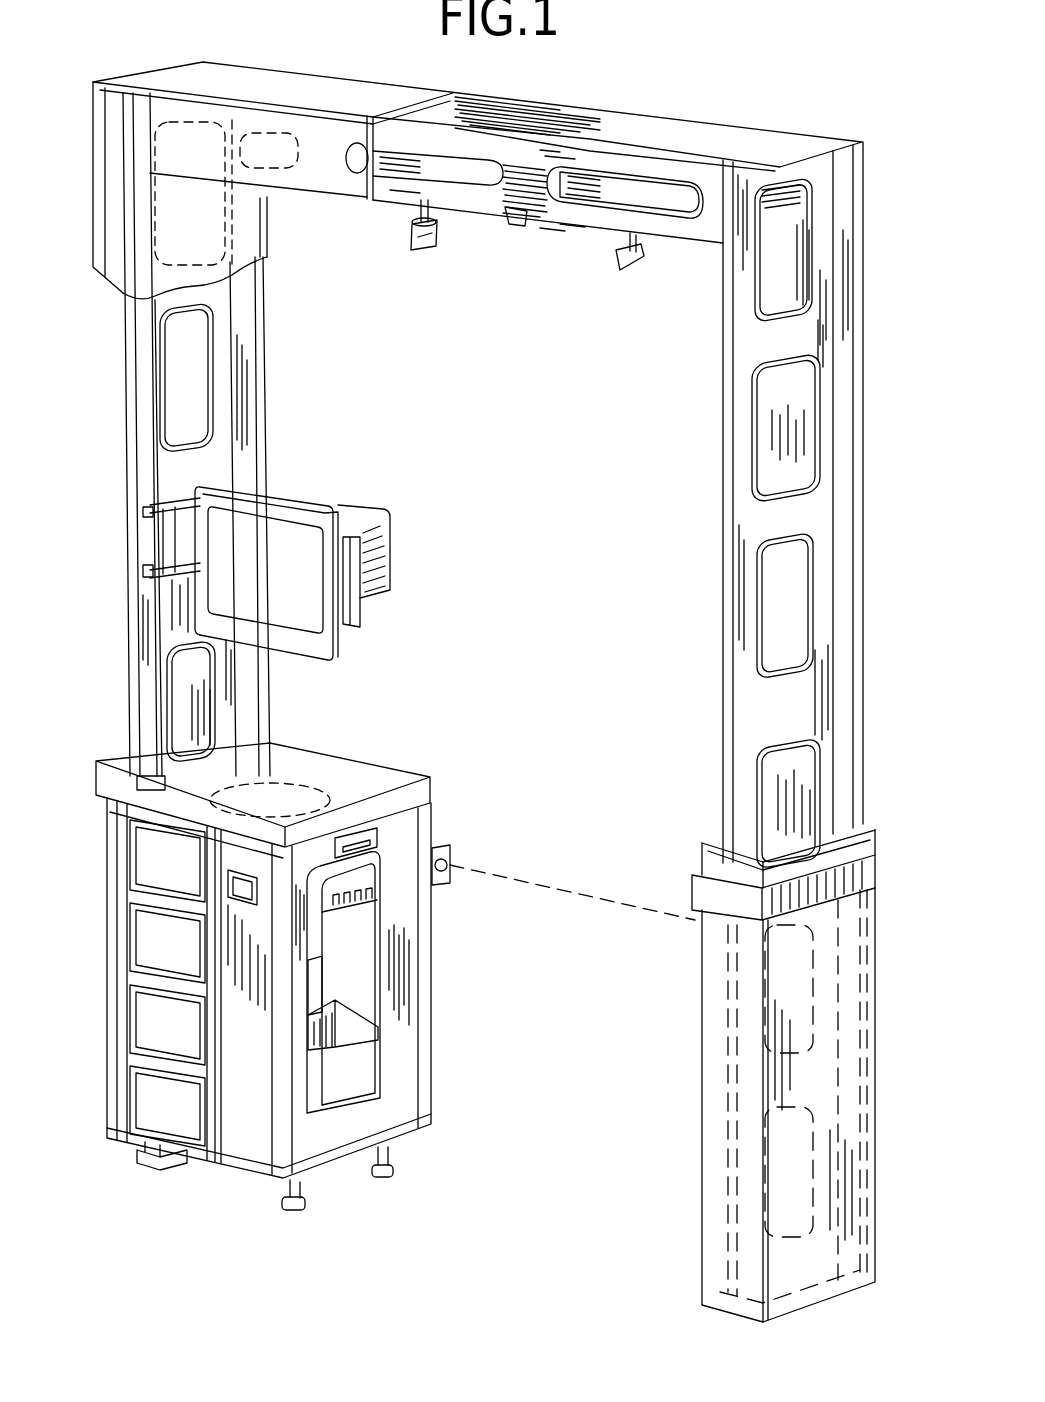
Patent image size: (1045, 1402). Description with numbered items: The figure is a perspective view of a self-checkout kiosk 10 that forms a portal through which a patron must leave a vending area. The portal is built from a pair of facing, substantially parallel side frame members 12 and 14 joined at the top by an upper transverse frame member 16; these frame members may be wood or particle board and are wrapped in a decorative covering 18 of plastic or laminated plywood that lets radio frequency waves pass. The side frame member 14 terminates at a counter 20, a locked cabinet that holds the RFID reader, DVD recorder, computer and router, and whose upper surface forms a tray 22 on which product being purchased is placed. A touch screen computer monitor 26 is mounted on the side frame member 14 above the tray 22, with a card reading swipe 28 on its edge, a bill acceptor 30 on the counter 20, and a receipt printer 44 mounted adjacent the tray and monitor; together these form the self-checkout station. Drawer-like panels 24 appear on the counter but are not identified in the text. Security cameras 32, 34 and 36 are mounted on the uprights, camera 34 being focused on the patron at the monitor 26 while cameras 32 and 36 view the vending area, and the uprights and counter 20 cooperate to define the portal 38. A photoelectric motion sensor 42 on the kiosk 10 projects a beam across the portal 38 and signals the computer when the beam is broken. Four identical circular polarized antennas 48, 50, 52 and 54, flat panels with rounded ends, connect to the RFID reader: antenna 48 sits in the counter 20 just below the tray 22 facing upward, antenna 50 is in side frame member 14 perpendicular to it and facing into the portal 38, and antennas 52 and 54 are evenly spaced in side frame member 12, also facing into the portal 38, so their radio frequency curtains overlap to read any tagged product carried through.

The kiosk 10 is at (861, 123).
The side frame member 12 is at (847, 687).
The side frame member 14 is at (258, 360).
The upper transverse frame member 16 is at (663, 128).
The decorative covering 18 is at (100, 264).
The counter 20 is at (408, 847).
The tray 22 is at (383, 772).
The drawer panels 24 is at (137, 978).
The touch screen computer monitor 26 is at (287, 537).
The card reading swipe 28 is at (362, 613).
The bill acceptor 30 is at (232, 889).
The security camera 32 is at (637, 267).
The security camera 34 is at (512, 228).
The security camera 36 is at (417, 253).
The portal 38 is at (650, 689).
The photoelectric motion sensor 42 is at (445, 883).
The receipt printer 44 is at (432, 813).
The antenna 48 is at (287, 803).
The antenna 50 is at (187, 688).
The antenna 52 is at (800, 410).
The antenna 54 is at (807, 793).